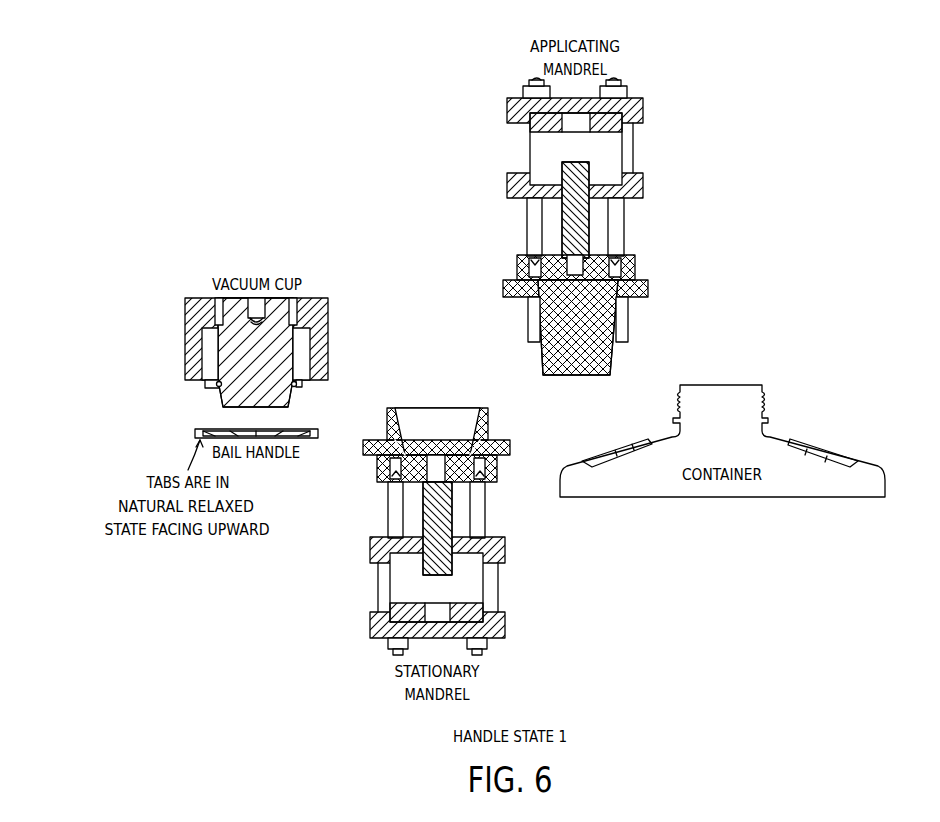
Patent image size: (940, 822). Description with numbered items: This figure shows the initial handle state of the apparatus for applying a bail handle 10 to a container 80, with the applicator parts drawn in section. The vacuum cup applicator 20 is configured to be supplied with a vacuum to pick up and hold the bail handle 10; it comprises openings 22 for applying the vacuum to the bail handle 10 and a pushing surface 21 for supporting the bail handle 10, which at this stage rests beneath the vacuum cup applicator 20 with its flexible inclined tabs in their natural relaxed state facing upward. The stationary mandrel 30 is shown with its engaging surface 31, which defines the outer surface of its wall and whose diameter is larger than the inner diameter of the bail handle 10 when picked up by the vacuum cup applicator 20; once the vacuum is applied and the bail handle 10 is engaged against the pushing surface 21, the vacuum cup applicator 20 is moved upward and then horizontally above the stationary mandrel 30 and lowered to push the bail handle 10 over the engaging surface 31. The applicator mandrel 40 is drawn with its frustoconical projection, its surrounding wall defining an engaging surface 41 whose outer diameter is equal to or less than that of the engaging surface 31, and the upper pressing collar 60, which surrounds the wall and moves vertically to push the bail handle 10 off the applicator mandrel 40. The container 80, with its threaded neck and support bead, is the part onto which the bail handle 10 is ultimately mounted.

The bail handle 10 is at (320, 434).
The vacuum cup applicator 20 is at (283, 350).
The pushing surface 21 is at (197, 381).
The openings 22 is at (303, 374).
The stationary mandrel 30 is at (489, 427).
The engaging surface 31 is at (487, 411).
The applicator mandrel 40 is at (597, 291).
The engaging surface 41 is at (625, 325).
The upper pressing collar 60 is at (648, 286).
The container 80 is at (864, 478).